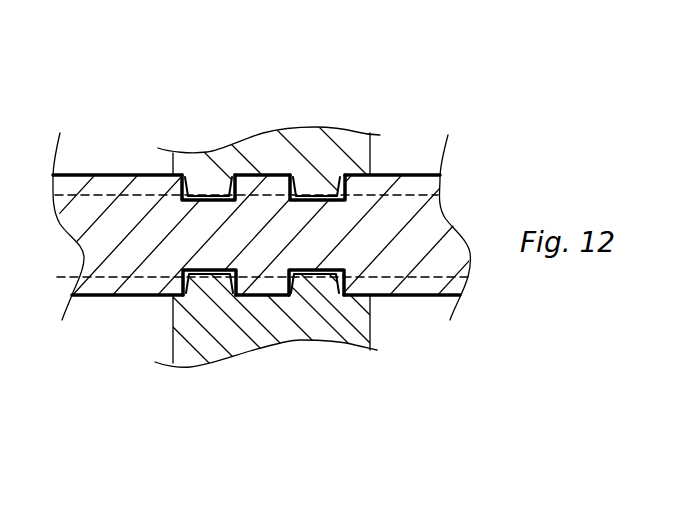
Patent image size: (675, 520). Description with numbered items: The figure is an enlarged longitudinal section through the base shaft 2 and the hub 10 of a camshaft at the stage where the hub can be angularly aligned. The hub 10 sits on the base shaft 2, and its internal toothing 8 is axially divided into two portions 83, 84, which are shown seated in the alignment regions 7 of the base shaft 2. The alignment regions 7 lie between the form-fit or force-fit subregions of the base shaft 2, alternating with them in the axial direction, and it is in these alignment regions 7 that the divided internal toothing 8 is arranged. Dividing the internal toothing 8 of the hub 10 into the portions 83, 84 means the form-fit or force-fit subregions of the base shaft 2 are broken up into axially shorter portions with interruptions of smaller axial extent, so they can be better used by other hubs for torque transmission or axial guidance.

The base shaft 2 is at (433, 223).
The alignment region 7 is at (228, 262).
The internal toothing 8 is at (205, 186).
The hub 10 is at (357, 148).
The portion of the internal toothing 83 is at (318, 188).
The portion of the internal toothing 84 is at (204, 189).